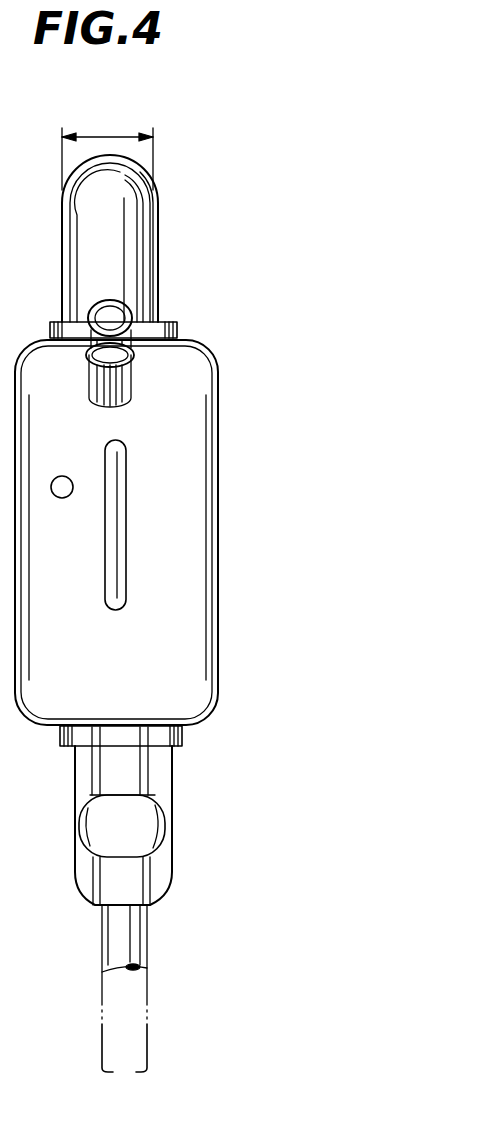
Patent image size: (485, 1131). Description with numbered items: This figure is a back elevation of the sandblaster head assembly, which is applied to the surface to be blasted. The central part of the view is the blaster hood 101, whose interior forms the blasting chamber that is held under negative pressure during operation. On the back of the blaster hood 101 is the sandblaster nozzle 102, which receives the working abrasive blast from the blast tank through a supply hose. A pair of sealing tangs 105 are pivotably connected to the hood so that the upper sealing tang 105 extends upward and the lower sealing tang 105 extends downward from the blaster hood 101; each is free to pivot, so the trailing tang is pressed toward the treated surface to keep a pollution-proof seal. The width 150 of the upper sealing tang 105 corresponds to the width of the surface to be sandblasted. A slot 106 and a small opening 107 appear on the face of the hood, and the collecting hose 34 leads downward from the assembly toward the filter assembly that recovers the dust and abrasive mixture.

The blaster hood 101 is at (220, 442).
The sandblaster nozzle 102 is at (142, 365).
The sealing tang 105 is at (160, 241).
The slot 106 is at (126, 530).
The button 107 is at (55, 476).
The width dimension 150 is at (115, 137).
The collecting hose 34 is at (150, 990).